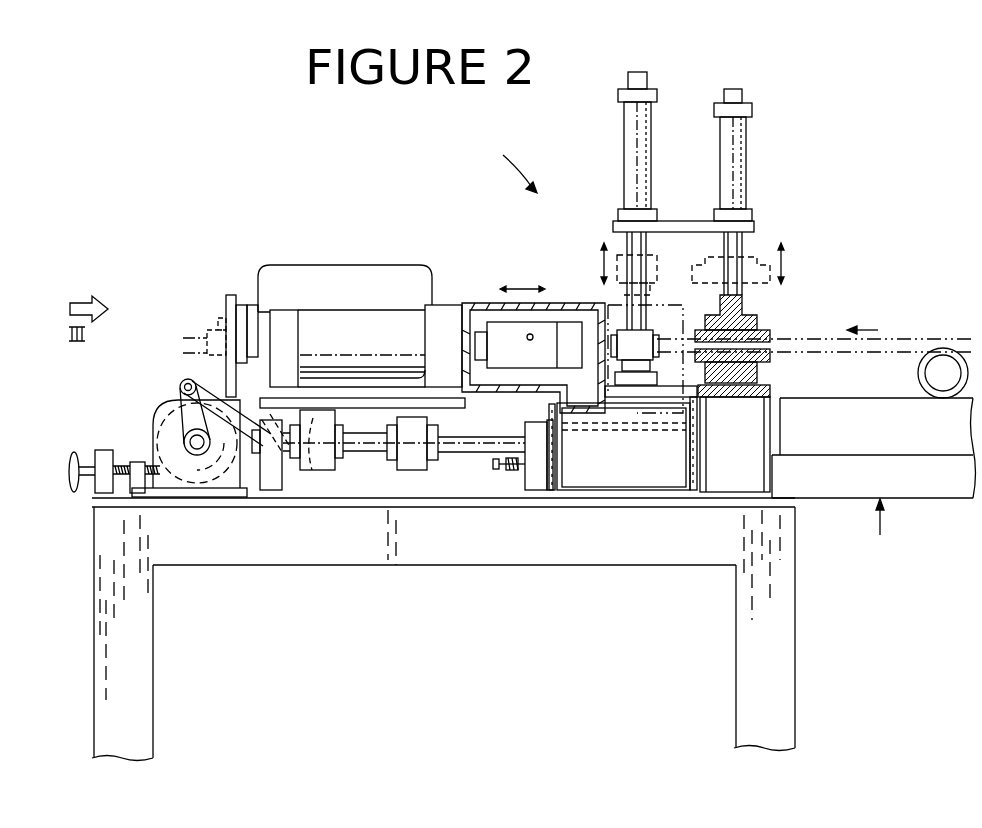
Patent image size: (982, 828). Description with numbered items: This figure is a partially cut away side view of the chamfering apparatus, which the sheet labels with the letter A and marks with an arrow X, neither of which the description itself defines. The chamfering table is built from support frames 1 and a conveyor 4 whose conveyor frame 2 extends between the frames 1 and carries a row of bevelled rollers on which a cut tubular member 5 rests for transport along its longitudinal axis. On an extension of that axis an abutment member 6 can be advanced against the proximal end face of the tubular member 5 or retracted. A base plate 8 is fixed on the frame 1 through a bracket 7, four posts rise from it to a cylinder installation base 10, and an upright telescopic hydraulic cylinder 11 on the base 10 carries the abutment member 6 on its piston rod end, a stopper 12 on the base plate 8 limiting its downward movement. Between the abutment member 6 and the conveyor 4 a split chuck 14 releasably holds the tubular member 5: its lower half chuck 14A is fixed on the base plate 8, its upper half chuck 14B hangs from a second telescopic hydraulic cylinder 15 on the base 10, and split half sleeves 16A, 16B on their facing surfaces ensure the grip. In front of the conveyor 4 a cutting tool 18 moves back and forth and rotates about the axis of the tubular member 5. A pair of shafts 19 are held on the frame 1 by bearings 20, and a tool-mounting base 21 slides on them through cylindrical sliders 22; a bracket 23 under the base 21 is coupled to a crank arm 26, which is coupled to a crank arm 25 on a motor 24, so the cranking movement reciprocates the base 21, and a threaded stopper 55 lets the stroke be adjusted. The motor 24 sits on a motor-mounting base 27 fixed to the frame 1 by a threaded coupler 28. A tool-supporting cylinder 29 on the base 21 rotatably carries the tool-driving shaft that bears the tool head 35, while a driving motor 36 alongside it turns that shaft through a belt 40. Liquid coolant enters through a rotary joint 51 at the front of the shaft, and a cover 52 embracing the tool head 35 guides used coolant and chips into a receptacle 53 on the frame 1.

The frame 1 is at (795, 676).
The conveyor frame 2 is at (930, 472).
The conveyor 4 is at (879, 531).
The tubular member 5 is at (916, 338).
The abutment member 6 is at (622, 336).
The bracket 7 is at (752, 481).
The base plate 8 is at (733, 398).
The cylinder installation base 10 is at (688, 222).
The telescopic hydraulic cylinder 11 is at (627, 150).
The stopper 12 is at (632, 378).
The chuck 14 is at (773, 315).
The lower half chuck 14A is at (768, 374).
The upper half chuck 14B is at (757, 315).
The telescopic hydraulic cylinder 15 is at (747, 170).
The split half sleeve 16A is at (771, 360).
The split half sleeve 16B is at (771, 337).
The cutting tool 18 is at (492, 323).
The shaft 19 is at (462, 456).
The bearing 20 is at (266, 478).
The tool-mounting base 21 is at (374, 410).
The cylindrical slider 22 is at (328, 472).
The bracket 23 is at (318, 428).
The motor 24 is at (156, 437).
The crank arm 25 is at (178, 414).
The crank arm 26 is at (192, 380).
The motor-mounting base 27 is at (165, 494).
The threaded coupler 28 is at (123, 494).
The tool-supporting cylinder 29 is at (362, 330).
The tool head 35 is at (546, 332).
The driving motor 36 is at (357, 264).
The belt 40 is at (232, 295).
The rotary joint 51 is at (210, 330).
The cover 52 is at (500, 392).
The receptacle 53 is at (640, 472).
The threaded stopper 55 is at (497, 472).
The apparatus A is at (509, 152).
The feed direction X is at (872, 330).